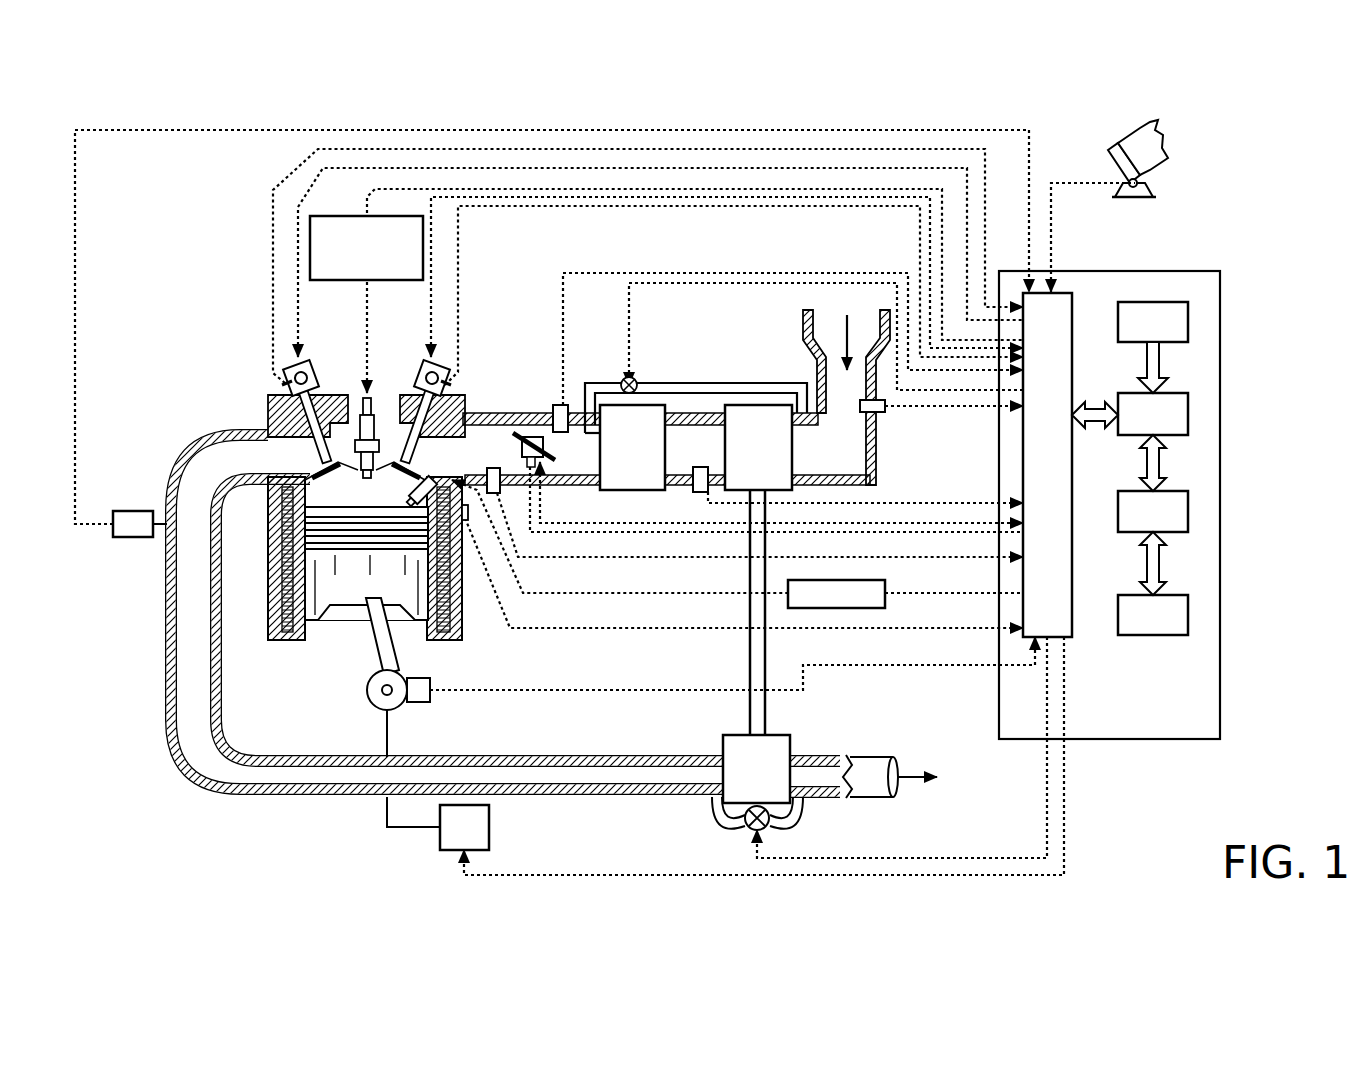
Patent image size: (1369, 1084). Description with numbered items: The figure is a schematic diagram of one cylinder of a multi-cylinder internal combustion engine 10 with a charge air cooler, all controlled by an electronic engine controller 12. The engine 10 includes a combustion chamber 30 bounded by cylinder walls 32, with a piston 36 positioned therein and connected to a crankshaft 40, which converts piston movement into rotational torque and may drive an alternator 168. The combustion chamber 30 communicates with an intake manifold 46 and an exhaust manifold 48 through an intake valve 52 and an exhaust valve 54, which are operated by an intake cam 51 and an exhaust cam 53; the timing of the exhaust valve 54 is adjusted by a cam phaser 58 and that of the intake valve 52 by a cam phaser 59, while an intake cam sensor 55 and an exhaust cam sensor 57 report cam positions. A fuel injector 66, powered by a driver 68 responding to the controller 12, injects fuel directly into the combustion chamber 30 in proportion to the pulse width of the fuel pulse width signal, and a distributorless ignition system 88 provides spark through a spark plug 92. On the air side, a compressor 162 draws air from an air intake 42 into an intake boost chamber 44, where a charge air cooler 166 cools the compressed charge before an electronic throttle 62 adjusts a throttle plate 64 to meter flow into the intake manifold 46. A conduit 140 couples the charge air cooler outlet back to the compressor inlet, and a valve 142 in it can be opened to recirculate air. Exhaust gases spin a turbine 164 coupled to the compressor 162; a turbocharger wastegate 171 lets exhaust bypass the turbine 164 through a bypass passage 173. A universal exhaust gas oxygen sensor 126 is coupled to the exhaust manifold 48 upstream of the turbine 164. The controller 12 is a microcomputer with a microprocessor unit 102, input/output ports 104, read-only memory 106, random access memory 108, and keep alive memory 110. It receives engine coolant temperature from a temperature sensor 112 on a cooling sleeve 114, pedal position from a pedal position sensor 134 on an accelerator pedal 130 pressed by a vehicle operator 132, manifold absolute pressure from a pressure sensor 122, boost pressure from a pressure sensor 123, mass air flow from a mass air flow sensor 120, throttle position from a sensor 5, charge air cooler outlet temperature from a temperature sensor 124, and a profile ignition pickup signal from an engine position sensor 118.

The throttle position sensor 5 is at (527, 482).
The internal combustion engine 10 is at (205, 355).
The electronic engine controller 12 is at (1222, 271).
The combustion chamber 30 is at (288, 587).
The cylinder walls 32 is at (305, 645).
The piston 36 is at (356, 600).
The crankshaft 40 is at (372, 718).
The air intake 42 is at (854, 454).
The intake boost chamber 44 is at (706, 459).
The intake manifold 46 is at (501, 458).
The exhaust manifold 48 is at (251, 466).
The intake cam 51 is at (418, 372).
The intake valve 52 is at (383, 440).
The exhaust cam 53 is at (318, 372).
The exhaust valve 54 is at (270, 432).
The intake cam sensor 55 is at (448, 384).
The exhaust cam sensor 57 is at (285, 383).
The cam phaser 58 is at (305, 365).
The cam phaser 59 is at (420, 362).
The electronic throttle 62 is at (540, 437).
The throttle plate 64 is at (515, 432).
The fuel injector 66 is at (428, 486).
The driver 68 is at (805, 580).
The distributorless ignition system 88 is at (323, 216).
The spark plug 92 is at (358, 415).
The microprocessor unit 102 is at (1190, 410).
The input/output ports 104 is at (1078, 300).
The read-only memory 106 is at (1190, 318).
The random access memory 108 is at (1190, 508).
The keep alive memory 110 is at (1190, 610).
The temperature sensor 112 is at (470, 525).
The cooling sleeve 114 is at (448, 600).
The engine position sensor 118 is at (418, 705).
The mass air flow sensor 120 is at (880, 412).
The pressure sensor 122 is at (498, 494).
The pressure sensor 123 is at (693, 490).
The temperature sensor 124 is at (575, 400).
The Universal Exhaust Gas Oxygen sensor 126 is at (123, 540).
The accelerator pedal 130 is at (1115, 158).
The vehicle operator 132 is at (1165, 150).
The pedal position sensor 134 is at (1152, 190).
The conduit 140 is at (752, 383).
The valve 142 is at (636, 382).
The compressor 162 is at (778, 462).
The turbine 164 is at (756, 769).
The charge air cooler 166 is at (652, 462).
The alternator 168 is at (484, 840).
The turbocharger wastegate 171 is at (748, 830).
The bypass passage 173 is at (790, 830).